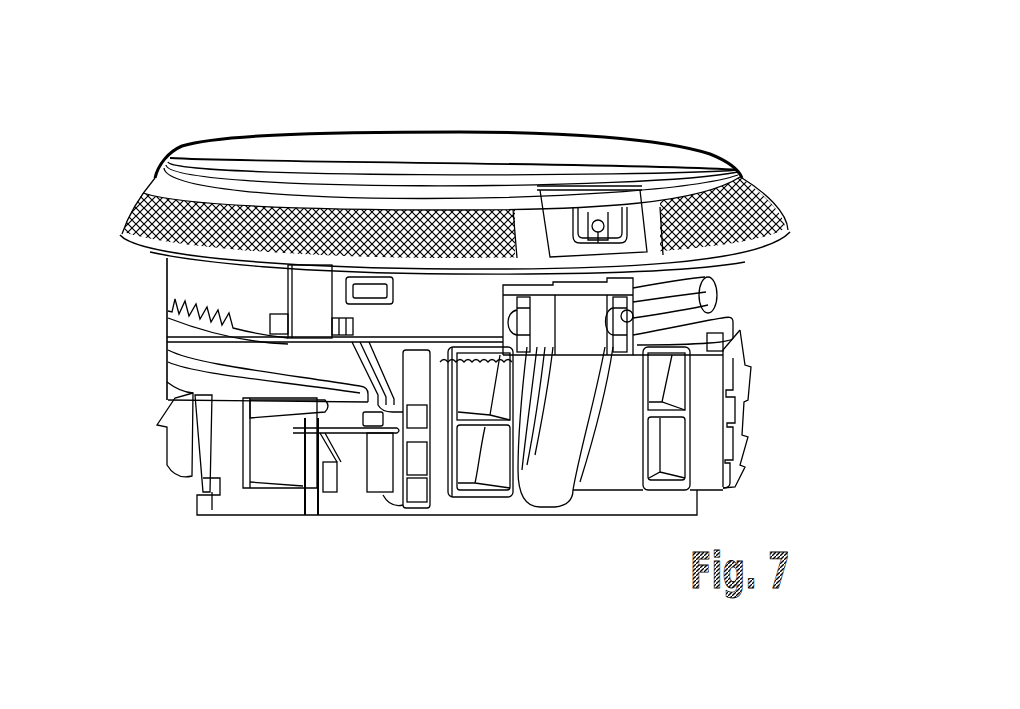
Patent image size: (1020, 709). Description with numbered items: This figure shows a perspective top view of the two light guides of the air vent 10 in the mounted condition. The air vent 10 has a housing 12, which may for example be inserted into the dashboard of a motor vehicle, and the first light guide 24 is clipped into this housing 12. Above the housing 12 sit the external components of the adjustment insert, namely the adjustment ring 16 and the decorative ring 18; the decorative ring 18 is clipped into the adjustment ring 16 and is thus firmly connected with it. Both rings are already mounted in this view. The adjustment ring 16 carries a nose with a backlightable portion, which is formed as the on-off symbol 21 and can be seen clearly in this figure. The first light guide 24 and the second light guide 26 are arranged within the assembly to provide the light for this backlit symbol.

The air vent 10 is at (430, 261).
The housing 12 is at (175, 381).
The adjustment ring 16 is at (143, 198).
The decorative ring 18 is at (733, 157).
The on-off symbol 21 is at (597, 222).
The first light guide 24 is at (180, 343).
The second light guide 26 is at (308, 298).